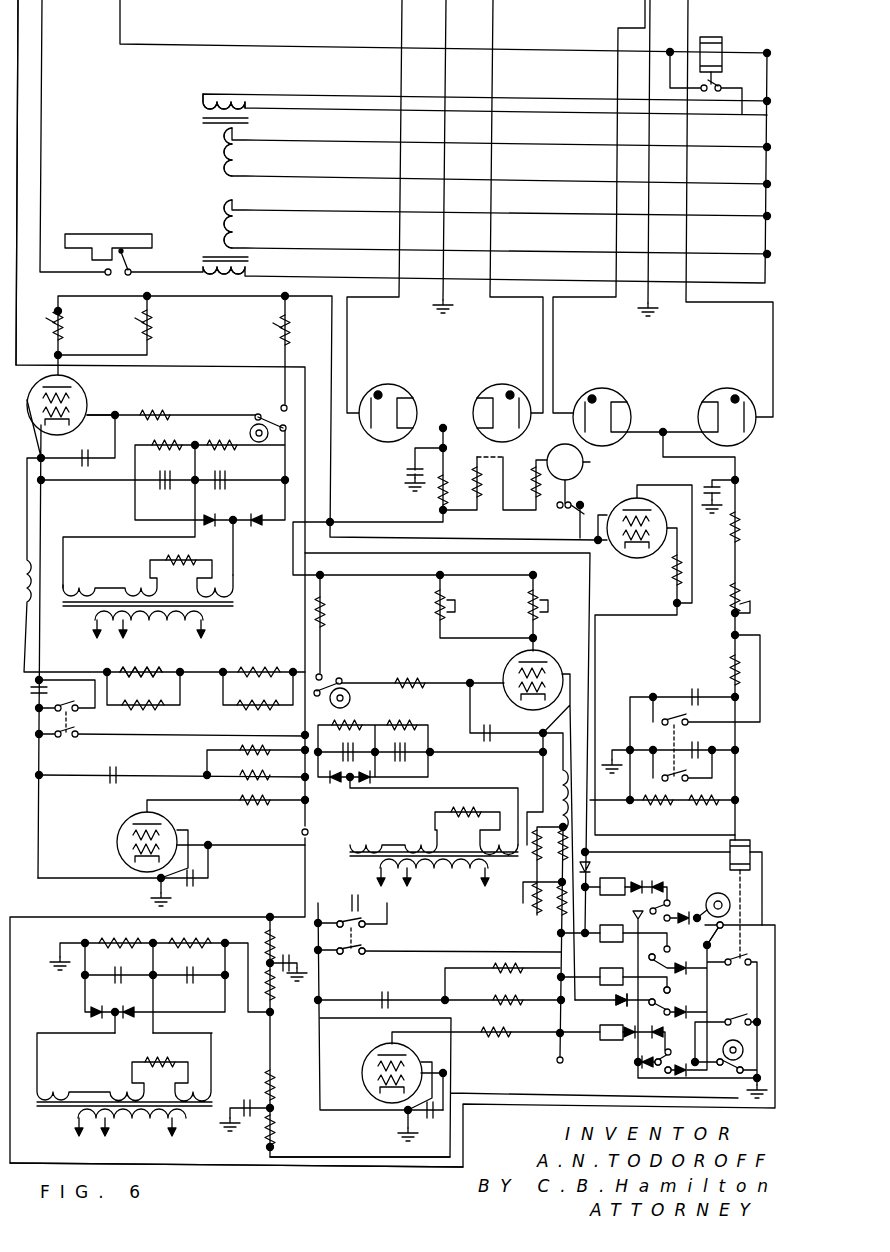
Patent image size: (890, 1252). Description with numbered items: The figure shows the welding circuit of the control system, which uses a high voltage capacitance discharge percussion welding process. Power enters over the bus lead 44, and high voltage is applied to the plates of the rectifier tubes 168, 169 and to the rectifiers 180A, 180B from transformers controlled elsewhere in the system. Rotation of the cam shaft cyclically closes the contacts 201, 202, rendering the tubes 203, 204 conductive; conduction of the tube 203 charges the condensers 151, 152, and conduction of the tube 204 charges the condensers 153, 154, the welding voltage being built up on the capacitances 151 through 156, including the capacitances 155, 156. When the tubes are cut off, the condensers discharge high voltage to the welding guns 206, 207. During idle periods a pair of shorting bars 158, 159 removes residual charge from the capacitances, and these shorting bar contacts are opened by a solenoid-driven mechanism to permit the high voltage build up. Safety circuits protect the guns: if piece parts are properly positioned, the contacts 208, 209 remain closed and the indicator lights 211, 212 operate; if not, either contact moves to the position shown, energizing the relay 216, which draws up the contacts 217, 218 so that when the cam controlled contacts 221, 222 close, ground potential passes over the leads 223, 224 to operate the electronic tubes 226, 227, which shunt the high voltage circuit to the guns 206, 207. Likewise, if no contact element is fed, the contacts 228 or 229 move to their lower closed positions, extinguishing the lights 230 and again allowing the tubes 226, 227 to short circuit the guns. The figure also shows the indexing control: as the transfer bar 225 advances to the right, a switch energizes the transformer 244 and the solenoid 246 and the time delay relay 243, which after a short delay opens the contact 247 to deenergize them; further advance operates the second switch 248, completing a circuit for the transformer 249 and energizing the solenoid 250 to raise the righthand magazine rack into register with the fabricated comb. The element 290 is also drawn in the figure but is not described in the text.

The time delay relay 243 is at (713, 46).
The contact 247 is at (712, 92).
The transformer 244 is at (245, 104).
The solenoid 246 is at (240, 145).
The solenoid 250 is at (240, 218).
The transformer 249 is at (252, 272).
The transfer bar 225 is at (97, 222).
The second switch 248 is at (135, 264).
The bus lead 44 is at (18, 318).
The tube 203 is at (88, 396).
The contact 201 is at (258, 412).
The rectifier 180A is at (387, 392).
The rectifier 180B is at (504, 392).
The rectifier tube 168 is at (594, 390).
The rectifier tube 169 is at (729, 392).
The contact 202 is at (330, 680).
The tube 204 is at (504, 668).
The capacitance 155 is at (690, 690).
The capacitance 156 is at (712, 756).
The condenser 151 is at (75, 689).
The shorting bar 158 is at (362, 924).
The shorting bar 159 is at (362, 949).
The condenser 152 is at (118, 773).
The electronic tube 227 is at (117, 840).
The welding gun 206 is at (308, 832).
The relay 216 is at (742, 845).
The lights 230 is at (618, 873).
The contact 229 is at (668, 903).
The cam controlled contact 221 is at (711, 899).
The indicator light 211 is at (612, 921).
The contact 217 is at (722, 946).
The indicator light 212 is at (612, 966).
The contact 208 is at (677, 976).
The contact 209 is at (640, 1012).
The relay 290 is at (626, 1045).
The contact 218 is at (720, 1044).
The contact 228 is at (655, 1072).
The cam controlled contact 222 is at (722, 1074).
The welding gun 207 is at (556, 1062).
The electronic tube 226 is at (375, 1049).
The lead 224 is at (386, 1165).
The lead 223 is at (306, 1157).
The condenser 153 is at (365, 905).
The condenser 154 is at (382, 994).